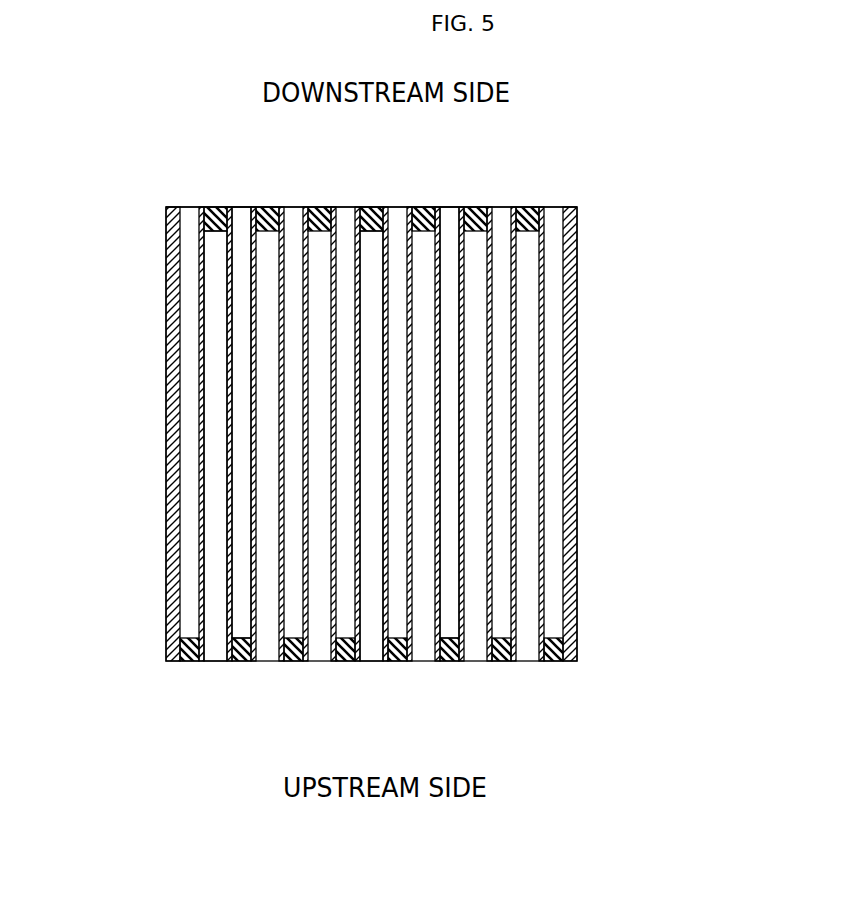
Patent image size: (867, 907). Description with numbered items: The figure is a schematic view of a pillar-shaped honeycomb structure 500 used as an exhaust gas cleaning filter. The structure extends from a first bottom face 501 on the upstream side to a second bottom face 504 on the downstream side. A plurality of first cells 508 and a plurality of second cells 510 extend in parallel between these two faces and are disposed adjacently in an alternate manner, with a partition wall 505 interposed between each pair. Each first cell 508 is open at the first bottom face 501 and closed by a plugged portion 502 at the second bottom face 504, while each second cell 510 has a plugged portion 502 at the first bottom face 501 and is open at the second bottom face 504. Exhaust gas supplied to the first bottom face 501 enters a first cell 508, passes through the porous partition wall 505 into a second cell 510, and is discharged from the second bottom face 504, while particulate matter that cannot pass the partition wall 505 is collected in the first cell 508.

The pillar-shaped honeycomb structure 500 is at (120, 265).
The first bottom face 501 is at (473, 667).
The plugged portion 502 is at (380, 207).
The second bottom face 504 is at (208, 197).
The partition wall 505 is at (201, 375).
The first cell 508 is at (215, 661).
The second cell 510 is at (247, 210).